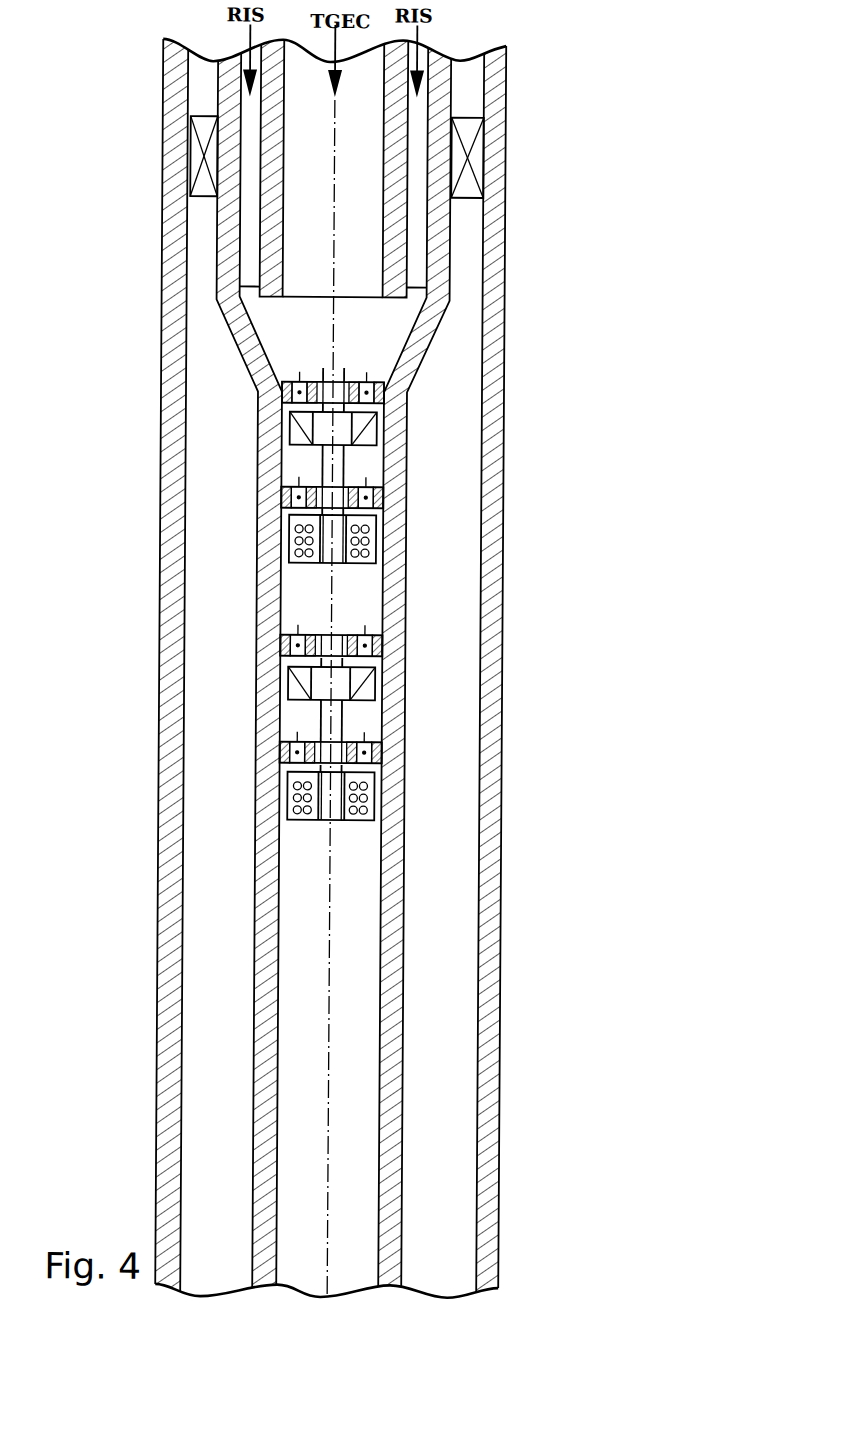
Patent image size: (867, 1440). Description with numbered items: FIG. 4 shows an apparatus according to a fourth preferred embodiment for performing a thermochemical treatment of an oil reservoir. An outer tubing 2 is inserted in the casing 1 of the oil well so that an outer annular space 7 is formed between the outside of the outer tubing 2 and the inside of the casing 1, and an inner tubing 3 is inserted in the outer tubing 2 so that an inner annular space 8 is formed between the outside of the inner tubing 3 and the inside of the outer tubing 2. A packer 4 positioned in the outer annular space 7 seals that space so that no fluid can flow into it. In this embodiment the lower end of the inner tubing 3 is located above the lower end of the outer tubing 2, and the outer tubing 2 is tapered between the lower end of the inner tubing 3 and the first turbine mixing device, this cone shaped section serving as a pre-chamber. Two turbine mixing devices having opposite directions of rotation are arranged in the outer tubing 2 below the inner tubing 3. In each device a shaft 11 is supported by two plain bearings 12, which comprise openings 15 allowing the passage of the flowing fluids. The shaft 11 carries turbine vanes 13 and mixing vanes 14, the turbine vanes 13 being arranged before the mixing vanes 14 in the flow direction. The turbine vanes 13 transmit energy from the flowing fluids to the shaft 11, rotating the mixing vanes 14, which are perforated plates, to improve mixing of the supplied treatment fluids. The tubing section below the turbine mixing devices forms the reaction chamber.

The casing 1 is at (489, 213).
The outer tubing 2 is at (224, 243).
The inner tubing 3 is at (395, 235).
The packer 4 is at (337, 131).
The outer annular space 7 is at (197, 251).
The inner annular space 8 is at (244, 211).
The shaft 11 is at (335, 380).
The plain bearing 12 is at (298, 395).
The turbine vanes 13 is at (358, 438).
The mixing vanes 14 is at (366, 787).
The openings 15 is at (344, 410).